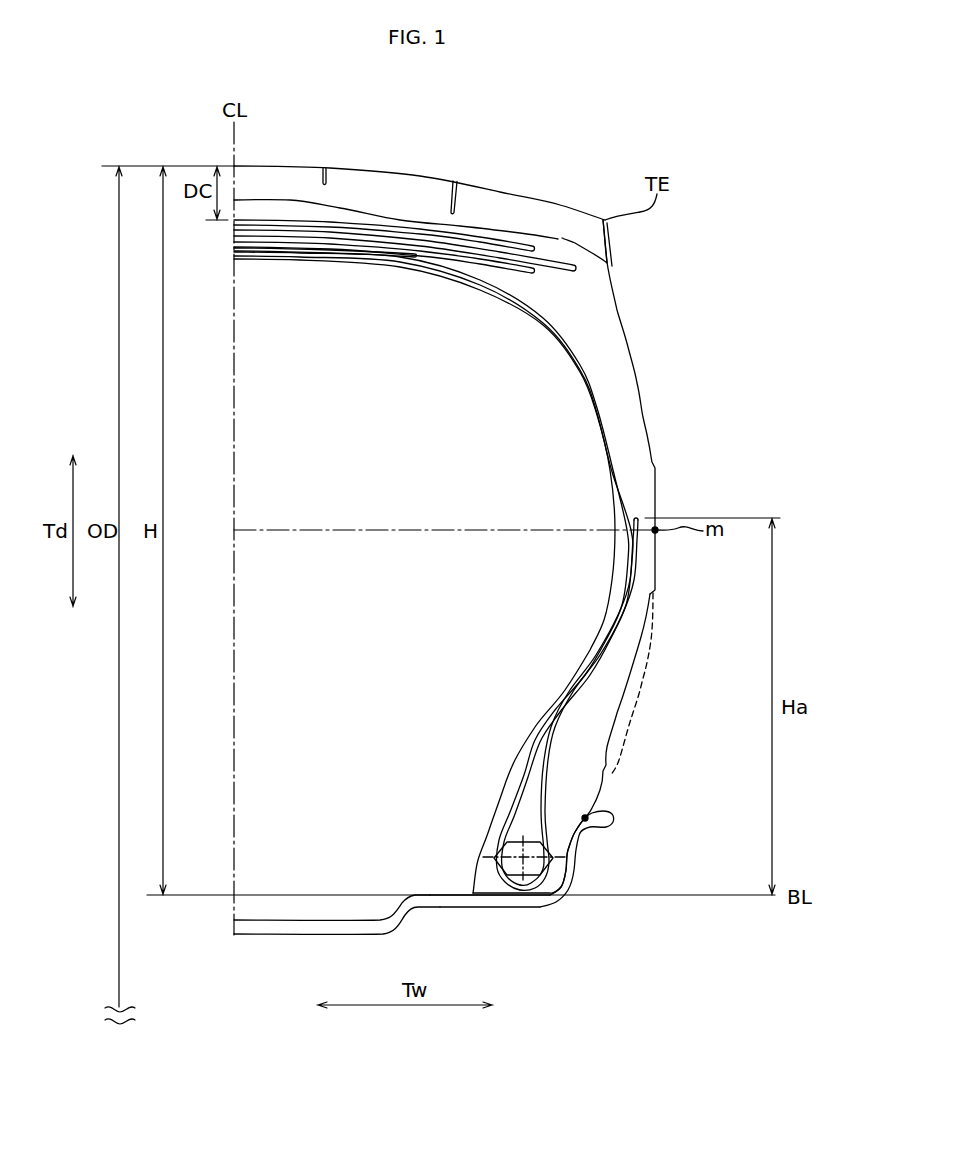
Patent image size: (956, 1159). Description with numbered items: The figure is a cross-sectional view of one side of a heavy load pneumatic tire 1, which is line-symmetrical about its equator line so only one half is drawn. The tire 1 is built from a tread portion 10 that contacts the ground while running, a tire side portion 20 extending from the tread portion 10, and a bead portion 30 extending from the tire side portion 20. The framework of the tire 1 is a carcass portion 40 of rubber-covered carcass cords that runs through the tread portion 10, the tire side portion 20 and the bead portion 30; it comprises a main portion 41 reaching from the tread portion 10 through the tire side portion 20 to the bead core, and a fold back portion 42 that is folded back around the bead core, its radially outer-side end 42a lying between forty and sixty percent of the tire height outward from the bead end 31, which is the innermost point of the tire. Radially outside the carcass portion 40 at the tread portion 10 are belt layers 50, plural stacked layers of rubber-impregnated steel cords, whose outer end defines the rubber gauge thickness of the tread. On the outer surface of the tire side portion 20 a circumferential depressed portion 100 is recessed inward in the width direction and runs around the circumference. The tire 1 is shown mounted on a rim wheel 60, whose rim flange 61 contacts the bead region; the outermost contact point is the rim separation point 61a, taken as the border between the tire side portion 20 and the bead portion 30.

The pneumatic tire 1 is at (754, 149).
The tread portion 10 is at (544, 167).
The tire side portion 20 is at (667, 514).
The bead portion 30 is at (578, 831).
The bead end 31 is at (537, 899).
The carcass portion 40 is at (606, 412).
The main portion 41 is at (623, 606).
The fold back portion 42 is at (633, 633).
The outer-side end of fold back portion 42a is at (637, 516).
The belt layers 50 is at (531, 231).
The rim wheel 60 is at (436, 909).
The rim flange 61 is at (568, 880).
The rim separation point 61a is at (612, 824).
The circumferential depressed portion 100 is at (638, 715).